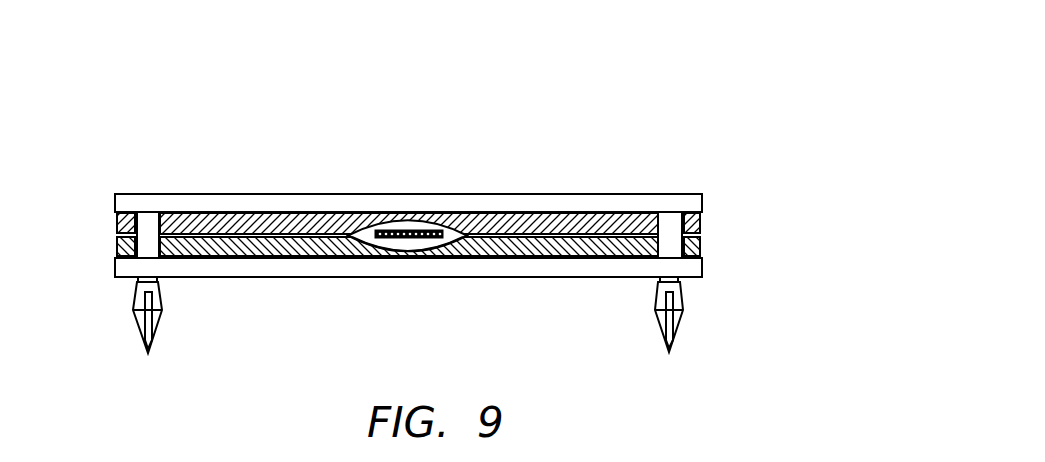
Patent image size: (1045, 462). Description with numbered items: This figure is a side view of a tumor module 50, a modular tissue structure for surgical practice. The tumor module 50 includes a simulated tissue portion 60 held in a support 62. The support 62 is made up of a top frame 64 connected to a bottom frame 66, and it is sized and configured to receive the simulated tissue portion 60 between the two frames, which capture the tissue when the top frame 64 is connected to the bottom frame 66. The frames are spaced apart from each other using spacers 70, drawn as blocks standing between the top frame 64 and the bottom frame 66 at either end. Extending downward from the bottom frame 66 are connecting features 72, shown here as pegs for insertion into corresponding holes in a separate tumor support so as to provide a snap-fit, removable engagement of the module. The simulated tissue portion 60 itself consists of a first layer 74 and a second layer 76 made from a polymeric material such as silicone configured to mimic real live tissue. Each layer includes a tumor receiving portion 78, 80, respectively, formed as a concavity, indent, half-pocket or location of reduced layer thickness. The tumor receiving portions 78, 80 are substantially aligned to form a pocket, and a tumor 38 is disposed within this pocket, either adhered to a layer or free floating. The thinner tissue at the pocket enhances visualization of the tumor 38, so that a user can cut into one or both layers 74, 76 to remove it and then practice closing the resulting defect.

The tumor 38 is at (390, 222).
The tumor module 50 is at (543, 159).
The simulated tissue portion 60 is at (513, 243).
The support 62 is at (654, 195).
The top frame 64 is at (693, 202).
The bottom frame 66 is at (697, 266).
The spacers 70 is at (148, 247).
The connecting features 72 is at (137, 325).
The first layer 74 is at (300, 222).
The second layer 76 is at (283, 247).
The tumor receiving portion 78 is at (442, 226).
The tumor receiving portion 80 is at (448, 245).